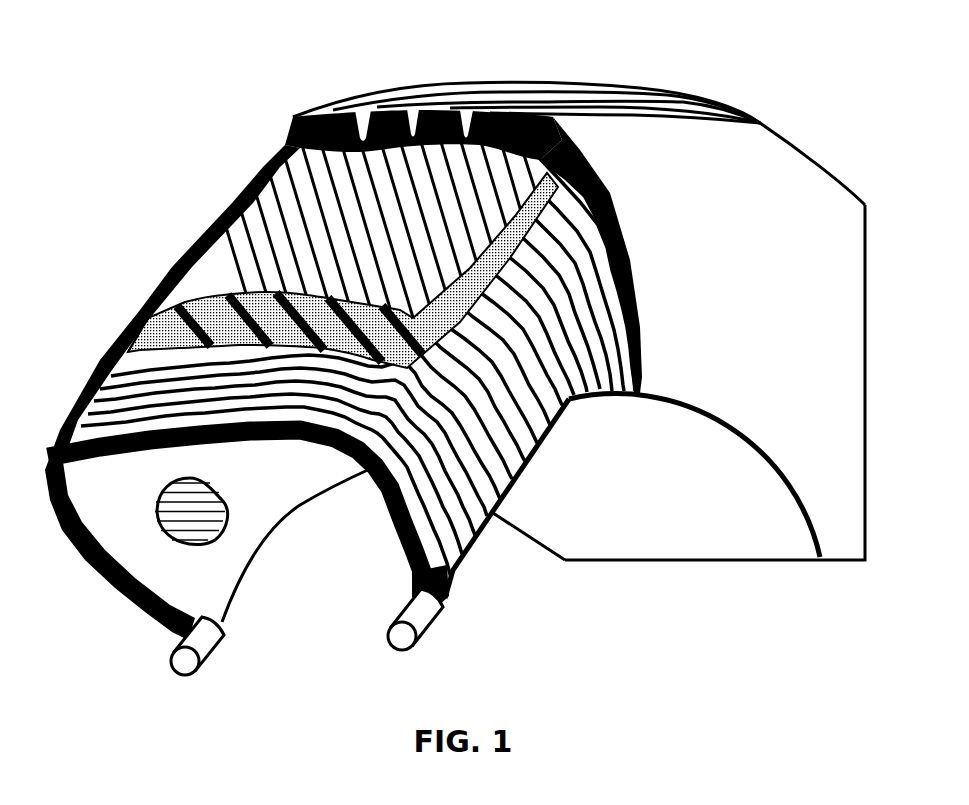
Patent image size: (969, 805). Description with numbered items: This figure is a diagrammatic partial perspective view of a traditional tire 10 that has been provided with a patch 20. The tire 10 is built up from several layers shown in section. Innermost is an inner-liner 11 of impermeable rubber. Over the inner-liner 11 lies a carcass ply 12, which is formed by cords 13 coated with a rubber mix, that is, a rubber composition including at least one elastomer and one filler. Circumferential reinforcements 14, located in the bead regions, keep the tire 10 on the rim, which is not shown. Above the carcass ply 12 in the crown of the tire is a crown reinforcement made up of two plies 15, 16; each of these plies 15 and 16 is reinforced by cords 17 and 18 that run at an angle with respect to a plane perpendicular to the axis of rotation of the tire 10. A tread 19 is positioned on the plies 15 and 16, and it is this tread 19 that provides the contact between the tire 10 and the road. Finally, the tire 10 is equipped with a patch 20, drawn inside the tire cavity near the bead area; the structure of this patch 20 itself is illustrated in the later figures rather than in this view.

The tire 10 is at (333, 72).
The inner-liner 11 is at (253, 540).
The carcass ply 12 is at (512, 381).
The cords 13 is at (455, 522).
The circumferential reinforcements 14 is at (207, 636).
The ply 15 is at (182, 285).
The ply 16 is at (266, 227).
The cords 17 is at (113, 340).
The cords 18 is at (200, 240).
The tread 19 is at (292, 148).
The patch 20 is at (189, 504).